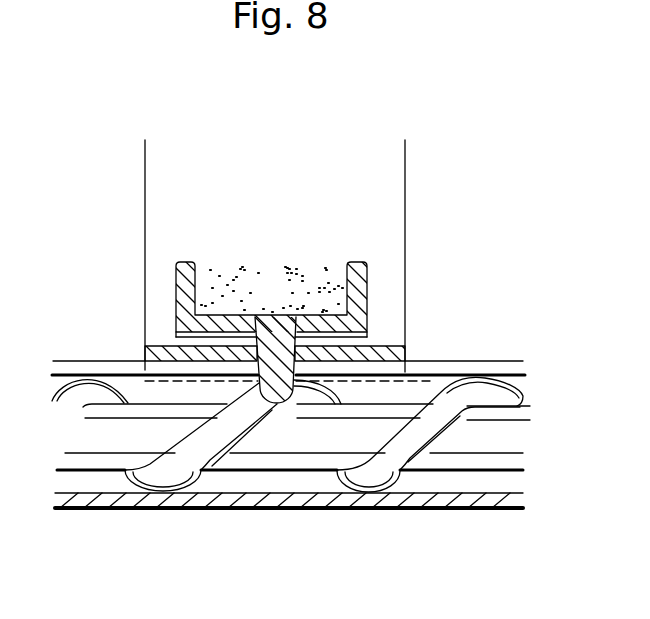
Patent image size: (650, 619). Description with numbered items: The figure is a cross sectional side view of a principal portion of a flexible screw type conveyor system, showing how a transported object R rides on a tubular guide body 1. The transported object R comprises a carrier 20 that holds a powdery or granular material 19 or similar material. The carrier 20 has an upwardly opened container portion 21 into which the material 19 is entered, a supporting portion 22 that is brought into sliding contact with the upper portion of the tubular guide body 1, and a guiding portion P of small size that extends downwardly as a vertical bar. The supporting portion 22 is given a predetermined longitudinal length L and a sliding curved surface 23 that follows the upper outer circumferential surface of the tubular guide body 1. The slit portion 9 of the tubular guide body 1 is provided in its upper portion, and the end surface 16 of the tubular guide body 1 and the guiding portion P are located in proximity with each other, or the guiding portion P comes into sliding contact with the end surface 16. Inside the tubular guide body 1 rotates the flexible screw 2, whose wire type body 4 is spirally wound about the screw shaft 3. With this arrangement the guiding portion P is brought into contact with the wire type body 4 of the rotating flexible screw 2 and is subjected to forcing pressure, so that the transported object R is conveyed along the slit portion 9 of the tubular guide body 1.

The tubular guide body 1 is at (113, 512).
The flexible screw 2 is at (215, 478).
The screw shaft 3 is at (300, 473).
The wire type body 4 is at (405, 477).
The slit portion 9 is at (420, 362).
The end surface 16 is at (470, 368).
The powdery or granular material 19 is at (257, 303).
The carrier 20 is at (173, 282).
The container portion 21 is at (345, 291).
The supporting portion 22 is at (166, 353).
The sliding curved surface 23 is at (180, 362).
The longitudinal length L is at (405, 163).
The guiding portion P is at (367, 342).
The transported object R is at (368, 250).